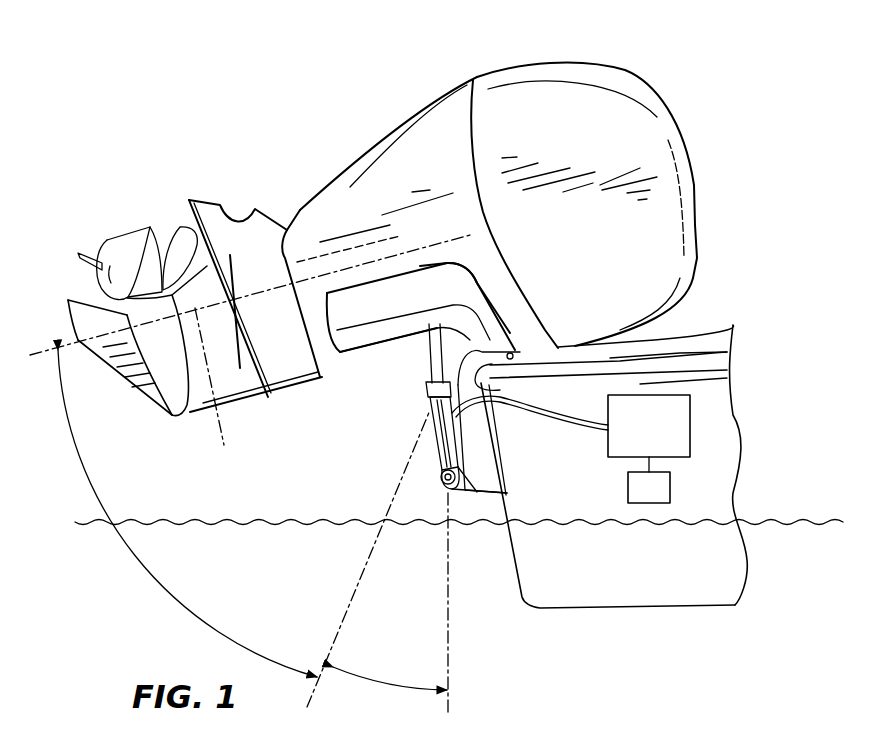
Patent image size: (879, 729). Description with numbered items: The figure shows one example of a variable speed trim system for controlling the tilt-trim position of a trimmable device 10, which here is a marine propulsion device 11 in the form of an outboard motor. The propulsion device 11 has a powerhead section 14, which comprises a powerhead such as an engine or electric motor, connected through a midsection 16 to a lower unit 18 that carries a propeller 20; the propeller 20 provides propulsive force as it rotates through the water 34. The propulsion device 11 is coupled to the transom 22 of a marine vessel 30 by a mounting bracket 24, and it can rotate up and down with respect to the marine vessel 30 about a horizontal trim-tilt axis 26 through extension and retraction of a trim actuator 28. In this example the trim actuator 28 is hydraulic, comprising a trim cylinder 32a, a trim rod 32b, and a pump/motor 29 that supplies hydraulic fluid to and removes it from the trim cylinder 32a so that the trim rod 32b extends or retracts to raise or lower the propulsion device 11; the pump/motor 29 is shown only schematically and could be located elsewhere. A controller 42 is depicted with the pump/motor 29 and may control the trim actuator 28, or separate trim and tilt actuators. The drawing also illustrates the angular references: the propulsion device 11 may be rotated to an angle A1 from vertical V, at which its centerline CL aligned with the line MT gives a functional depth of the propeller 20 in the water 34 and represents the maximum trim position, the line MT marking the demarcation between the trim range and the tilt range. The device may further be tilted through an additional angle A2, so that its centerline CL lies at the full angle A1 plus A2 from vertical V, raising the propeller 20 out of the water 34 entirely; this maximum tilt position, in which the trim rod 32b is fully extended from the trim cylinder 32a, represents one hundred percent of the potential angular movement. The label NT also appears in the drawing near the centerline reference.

The trimmable device 10 is at (699, 106).
The marine propulsion device 11 is at (618, 73).
The powerhead section 14 is at (665, 207).
The midsection 16 is at (382, 157).
The lower unit 18 is at (247, 215).
The propeller 20 is at (130, 245).
The transom 22 is at (515, 568).
The mounting bracket 24 is at (477, 340).
The horizontal trim-tilt axis 26 is at (514, 354).
The trim actuator 28 is at (470, 437).
The pump/motor 29 is at (649, 426).
The marine vessel 30 is at (717, 432).
The trim cylinder 32a is at (437, 453).
The trim rod 32b is at (430, 357).
The water 34 is at (783, 527).
The controller 42 is at (649, 480).
The angle A1 is at (383, 680).
The angle A2 is at (153, 578).
The centerline CL is at (304, 482).
The line MT is at (395, 497).
The vertical V is at (447, 607).
The neutral tilt reference NT is at (598, 727).